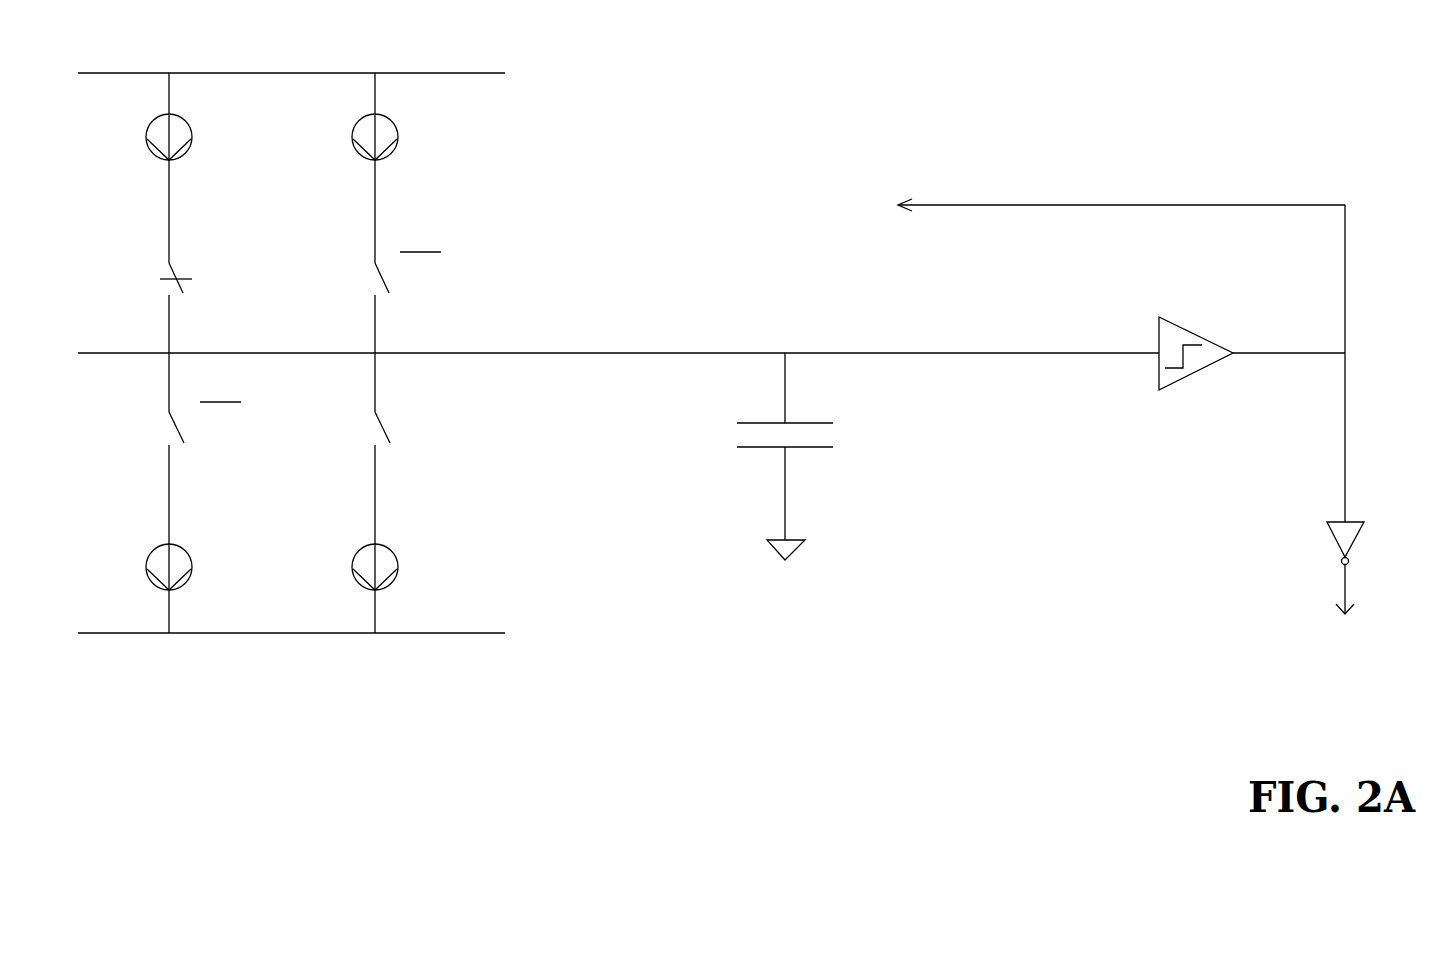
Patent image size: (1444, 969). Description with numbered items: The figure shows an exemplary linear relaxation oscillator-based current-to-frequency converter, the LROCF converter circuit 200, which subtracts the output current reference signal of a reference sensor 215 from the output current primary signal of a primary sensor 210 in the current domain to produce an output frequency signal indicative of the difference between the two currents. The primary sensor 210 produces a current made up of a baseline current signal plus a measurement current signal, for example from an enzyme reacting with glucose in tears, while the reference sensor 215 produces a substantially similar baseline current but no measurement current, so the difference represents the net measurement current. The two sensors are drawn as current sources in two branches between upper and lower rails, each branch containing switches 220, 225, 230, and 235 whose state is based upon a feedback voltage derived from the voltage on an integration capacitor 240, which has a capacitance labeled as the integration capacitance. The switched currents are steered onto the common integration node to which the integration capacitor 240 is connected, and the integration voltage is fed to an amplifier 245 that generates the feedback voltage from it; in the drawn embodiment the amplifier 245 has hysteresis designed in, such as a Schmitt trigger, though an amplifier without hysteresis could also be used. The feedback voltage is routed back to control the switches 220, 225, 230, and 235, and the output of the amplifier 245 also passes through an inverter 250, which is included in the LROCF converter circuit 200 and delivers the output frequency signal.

The LROCF converter circuit 200 is at (1024, 58).
The primary sensor 210 is at (147, 139).
The reference sensor 215 is at (353, 139).
The switch 220 is at (150, 278).
The switch 225 is at (370, 278).
The switch 230 is at (158, 430).
The switch 235 is at (373, 430).
The integration capacitor 240 is at (758, 420).
The amplifier 245 is at (1197, 333).
The inverter 250 is at (1327, 522).